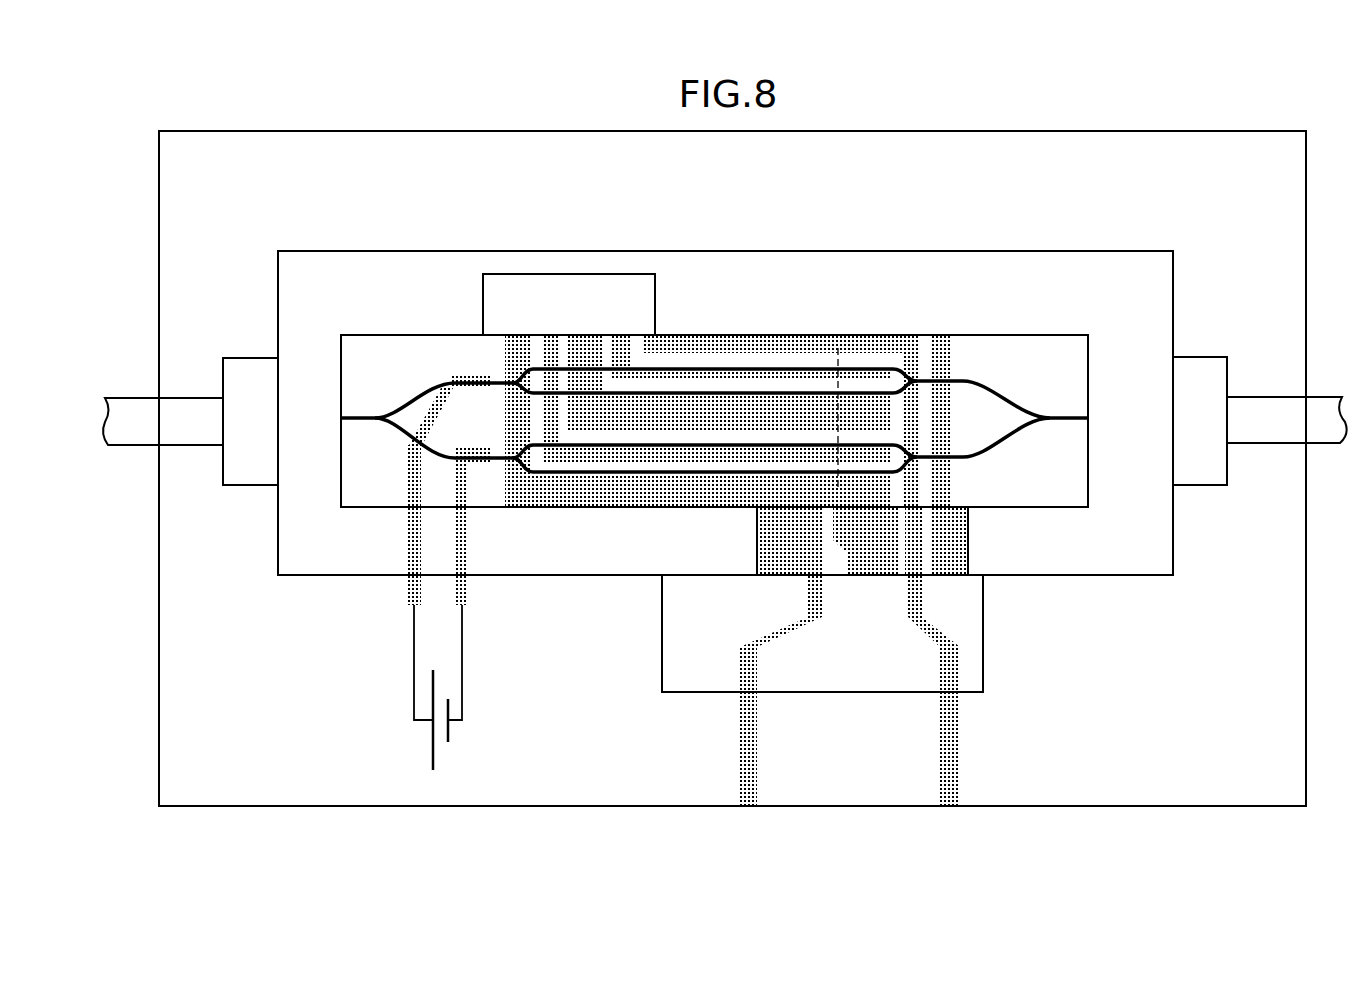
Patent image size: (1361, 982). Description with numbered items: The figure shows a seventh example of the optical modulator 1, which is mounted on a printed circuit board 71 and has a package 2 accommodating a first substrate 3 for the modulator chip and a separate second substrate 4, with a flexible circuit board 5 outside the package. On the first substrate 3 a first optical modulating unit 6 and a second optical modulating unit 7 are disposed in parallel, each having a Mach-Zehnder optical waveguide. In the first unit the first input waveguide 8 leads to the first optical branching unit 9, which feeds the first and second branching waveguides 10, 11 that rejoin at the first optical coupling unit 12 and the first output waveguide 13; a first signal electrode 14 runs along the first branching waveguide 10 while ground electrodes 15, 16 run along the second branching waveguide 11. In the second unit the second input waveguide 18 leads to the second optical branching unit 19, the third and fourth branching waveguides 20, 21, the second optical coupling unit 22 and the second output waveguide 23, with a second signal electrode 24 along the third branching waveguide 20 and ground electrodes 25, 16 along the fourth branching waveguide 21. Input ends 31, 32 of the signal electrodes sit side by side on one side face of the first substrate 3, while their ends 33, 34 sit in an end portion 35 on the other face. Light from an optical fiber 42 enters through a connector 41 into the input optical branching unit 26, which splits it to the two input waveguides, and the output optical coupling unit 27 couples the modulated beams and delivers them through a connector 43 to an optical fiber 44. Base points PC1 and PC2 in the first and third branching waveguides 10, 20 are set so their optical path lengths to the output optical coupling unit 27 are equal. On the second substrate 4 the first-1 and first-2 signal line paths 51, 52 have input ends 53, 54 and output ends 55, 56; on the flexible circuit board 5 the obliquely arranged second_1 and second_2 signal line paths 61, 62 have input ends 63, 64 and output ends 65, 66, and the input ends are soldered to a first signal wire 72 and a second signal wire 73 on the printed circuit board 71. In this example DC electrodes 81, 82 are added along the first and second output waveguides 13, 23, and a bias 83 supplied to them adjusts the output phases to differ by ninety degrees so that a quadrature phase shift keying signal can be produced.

The optical modulator 1 is at (338, 248).
The package 2 is at (285, 251).
The first substrate 3 is at (368, 335).
The second substrate 4 is at (938, 542).
The flexible circuit board 5 is at (854, 686).
The first optical modulating unit 6 is at (714, 386).
The second optical modulating unit 7 is at (665, 514).
The first input waveguide 8 is at (995, 380).
The first optical branching unit 9 is at (910, 345).
The first branching waveguide 10 is at (745, 392).
The second branching waveguide 11 is at (708, 378).
The first optical coupling unit 12 is at (505, 380).
The first output waveguide 13 is at (447, 378).
The first signal electrode 14 is at (818, 318).
The ground electrode 15 is at (682, 345).
The ground electrode 16 is at (590, 345).
The second input waveguide 18 is at (1020, 418).
The second optical branching unit 19 is at (940, 345).
The third branching waveguide 20 is at (645, 474).
The fourth branching waveguide 21 is at (580, 488).
The second optical coupling unit 22 is at (503, 488).
The second output waveguide 23 is at (412, 455).
The second signal electrode 24 is at (725, 450).
The ground electrode 25 is at (517, 345).
The input optical branching unit 26 is at (1090, 418).
The output optical coupling unit 27 is at (342, 418).
The input end 31 is at (915, 505).
The input end 32 is at (860, 500).
The end 33 is at (622, 345).
The end 34 is at (550, 345).
The end portion 35 is at (645, 274).
The connector 41 is at (1195, 357).
The optical fiber 42 is at (1320, 397).
The connector 43 is at (250, 357).
The optical fiber 44 is at (138, 398).
The first-1 signal line path 51 is at (912, 568).
The first-2 signal line path 52 is at (822, 583).
The input end 53 is at (915, 578).
The input end 54 is at (818, 590).
The output end 55 is at (910, 513).
The output end 56 is at (835, 567).
The second_1 signal line path 61 is at (925, 640).
The second_2 signal line path 62 is at (758, 690).
The input end 63 is at (953, 693).
The input end 64 is at (745, 700).
The output end 65 is at (915, 585).
The output end 66 is at (772, 640).
The printed circuit board 71 is at (187, 131).
The first signal wire 72 is at (960, 773).
The second signal wire 73 is at (740, 770).
The DC electrode 81 is at (410, 555).
The DC electrode 82 is at (467, 555).
The bias 83 is at (432, 752).
The base point PC1 is at (840, 372).
The base point PC2 is at (843, 443).